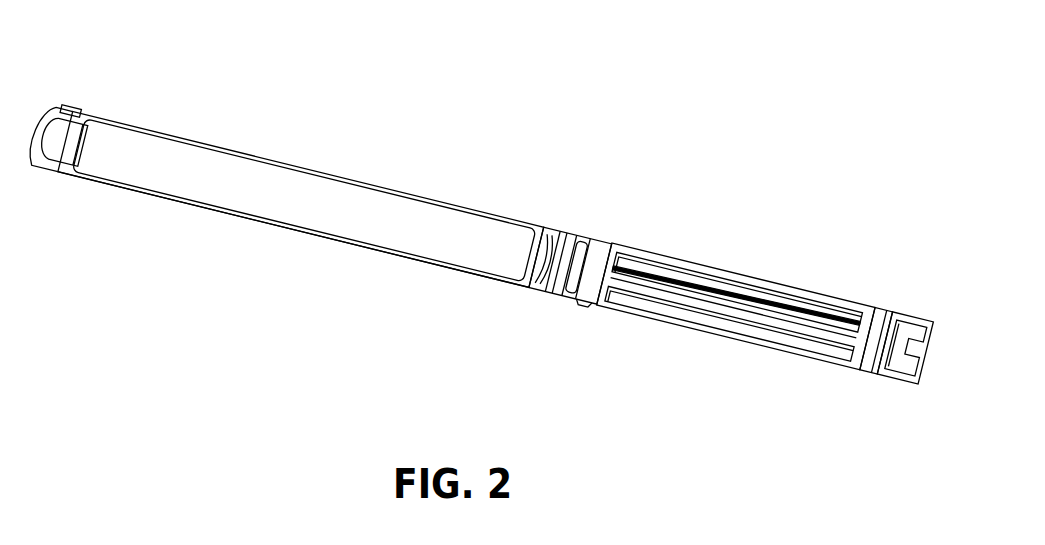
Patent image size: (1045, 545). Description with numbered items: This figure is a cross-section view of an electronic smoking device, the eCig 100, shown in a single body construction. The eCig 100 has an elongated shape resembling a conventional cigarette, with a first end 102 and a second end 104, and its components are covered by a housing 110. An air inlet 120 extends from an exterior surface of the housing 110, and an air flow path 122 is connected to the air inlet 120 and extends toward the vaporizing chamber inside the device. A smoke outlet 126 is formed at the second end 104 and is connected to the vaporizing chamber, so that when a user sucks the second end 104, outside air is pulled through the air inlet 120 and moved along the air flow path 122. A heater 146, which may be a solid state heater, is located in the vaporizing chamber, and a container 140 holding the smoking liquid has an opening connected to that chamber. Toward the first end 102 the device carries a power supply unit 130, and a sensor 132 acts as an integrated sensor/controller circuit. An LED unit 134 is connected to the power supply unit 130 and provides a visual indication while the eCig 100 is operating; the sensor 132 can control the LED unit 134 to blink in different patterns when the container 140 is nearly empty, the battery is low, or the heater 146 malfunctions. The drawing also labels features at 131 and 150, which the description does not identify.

The eCig 100 is at (532, 109).
The first end 102 is at (37, 112).
The second end 104 is at (922, 382).
The housing 110 is at (242, 222).
The air inlet 120 is at (588, 305).
The air flow path 122 is at (787, 318).
The smoke outlet 126 is at (905, 345).
The power supply unit 130 is at (283, 188).
The sealing ring 131 is at (555, 233).
The sensor 132 is at (582, 241).
The LED unit 134 is at (73, 108).
The container 140 is at (697, 320).
The heater 146 is at (870, 368).
The end ring 150 is at (895, 381).